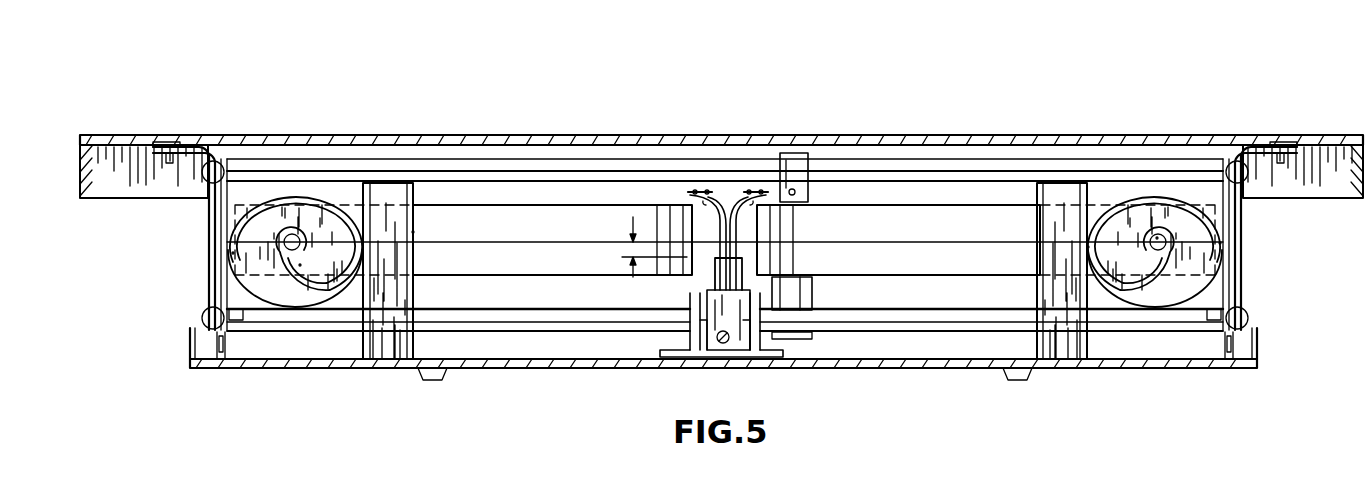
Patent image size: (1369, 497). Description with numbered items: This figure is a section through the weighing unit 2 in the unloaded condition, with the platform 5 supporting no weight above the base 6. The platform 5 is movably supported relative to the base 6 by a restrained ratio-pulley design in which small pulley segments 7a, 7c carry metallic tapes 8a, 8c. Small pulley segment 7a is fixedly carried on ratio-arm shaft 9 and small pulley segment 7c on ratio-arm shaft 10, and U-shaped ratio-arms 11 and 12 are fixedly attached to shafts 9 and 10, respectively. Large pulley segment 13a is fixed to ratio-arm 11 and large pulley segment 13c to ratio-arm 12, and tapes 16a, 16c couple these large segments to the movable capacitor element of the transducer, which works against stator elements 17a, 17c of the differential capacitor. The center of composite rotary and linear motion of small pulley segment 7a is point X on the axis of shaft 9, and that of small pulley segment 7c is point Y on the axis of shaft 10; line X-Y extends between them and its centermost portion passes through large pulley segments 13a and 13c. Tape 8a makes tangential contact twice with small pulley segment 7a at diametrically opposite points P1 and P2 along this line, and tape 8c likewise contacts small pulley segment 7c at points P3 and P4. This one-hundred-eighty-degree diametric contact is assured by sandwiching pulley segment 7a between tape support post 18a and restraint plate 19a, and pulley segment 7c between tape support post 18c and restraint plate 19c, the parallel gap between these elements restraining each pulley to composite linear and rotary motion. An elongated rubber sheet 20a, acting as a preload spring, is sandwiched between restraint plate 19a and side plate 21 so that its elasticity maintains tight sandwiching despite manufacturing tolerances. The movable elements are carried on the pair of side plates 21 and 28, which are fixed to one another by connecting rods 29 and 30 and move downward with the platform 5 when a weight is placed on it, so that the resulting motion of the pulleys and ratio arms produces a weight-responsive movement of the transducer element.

The weighing unit 2 is at (423, 126).
The platform 5 is at (316, 212).
The base 6 is at (297, 369).
The small pulley segment 7a is at (323, 214).
The small pulley segment 7c is at (1110, 203).
The metallic tape 8a is at (258, 196).
The metallic tape 8c is at (1188, 197).
The ratio-arm shaft 9 is at (300, 227).
The ratio-arm shaft 10 is at (1170, 252).
The U-shaped ratio-arm 11 is at (533, 217).
The U-shaped ratio-arm 12 is at (995, 217).
The large pulley segment 13a is at (690, 193).
The large pulley segment 13c is at (758, 194).
The tape 16a is at (712, 191).
The tape 16c is at (737, 191).
The stator element 17a is at (718, 275).
The stator element 17c is at (744, 275).
The tape support post 18a is at (380, 343).
The tape support post 18c is at (1062, 340).
The restraint plate 19a is at (225, 148).
The restraint plate 19c is at (1228, 166).
The rubber sheet preload spring 20a is at (217, 215).
The side plate 21 is at (183, 140).
The side plate 28 is at (1243, 302).
The connecting rod 29 is at (472, 163).
The connecting rod 30 is at (530, 332).
The tangential contact point P1 is at (233, 253).
The tangential contact point P2 is at (443, 225).
The tangential contact point P3 is at (1088, 247).
The tangential contact point P4 is at (1220, 243).
The center of composite motion X is at (445, 223).
The center of composite motion Y is at (1157, 238).
The line x-y X-Y is at (885, 242).